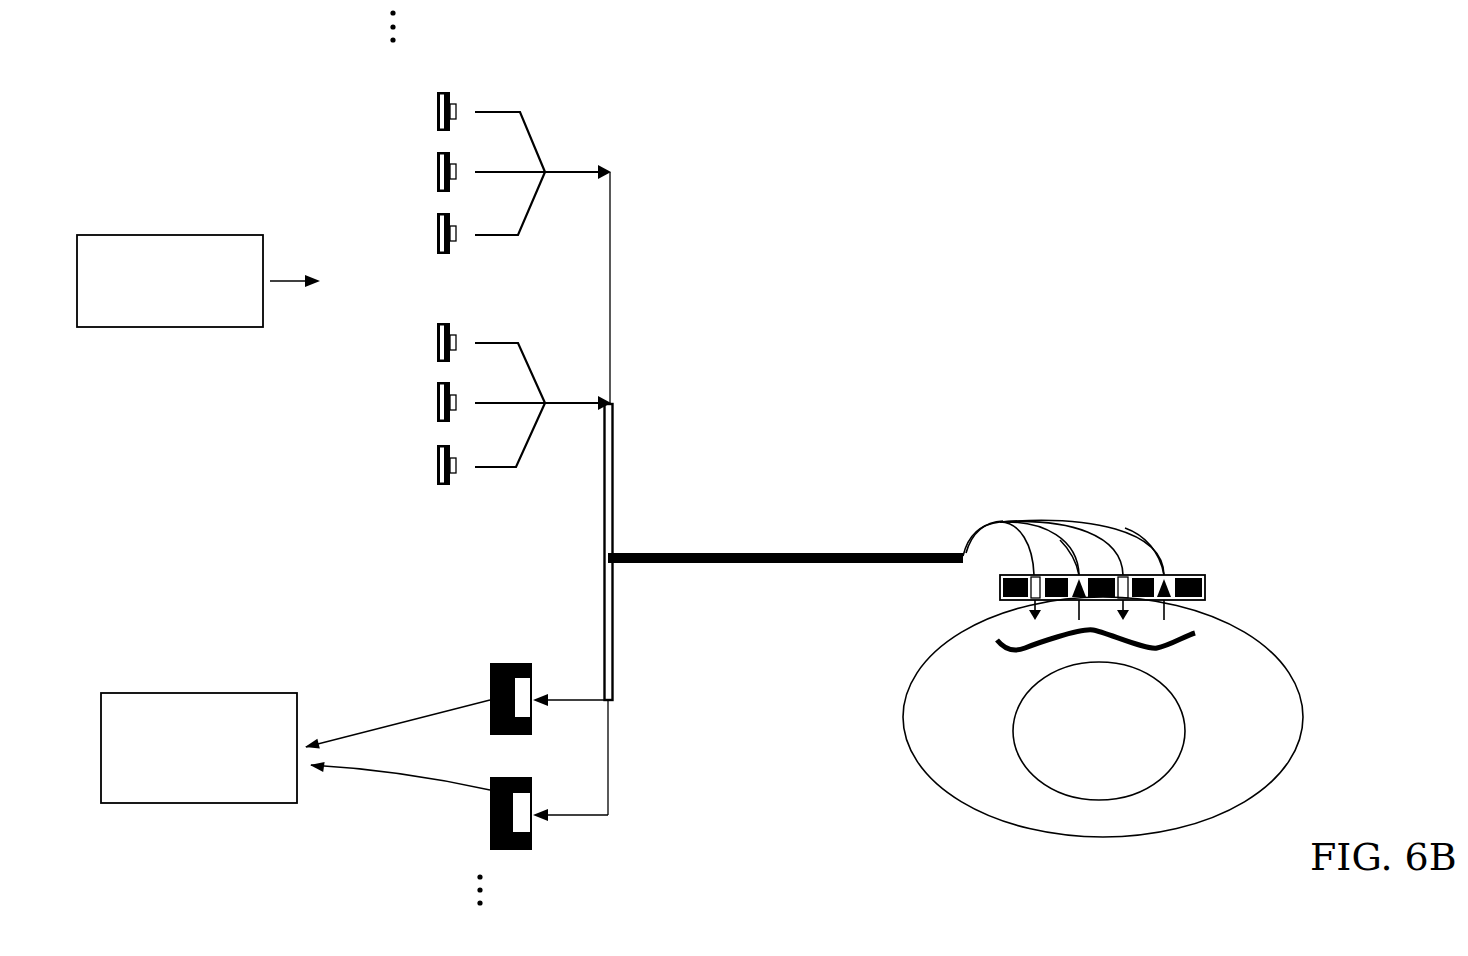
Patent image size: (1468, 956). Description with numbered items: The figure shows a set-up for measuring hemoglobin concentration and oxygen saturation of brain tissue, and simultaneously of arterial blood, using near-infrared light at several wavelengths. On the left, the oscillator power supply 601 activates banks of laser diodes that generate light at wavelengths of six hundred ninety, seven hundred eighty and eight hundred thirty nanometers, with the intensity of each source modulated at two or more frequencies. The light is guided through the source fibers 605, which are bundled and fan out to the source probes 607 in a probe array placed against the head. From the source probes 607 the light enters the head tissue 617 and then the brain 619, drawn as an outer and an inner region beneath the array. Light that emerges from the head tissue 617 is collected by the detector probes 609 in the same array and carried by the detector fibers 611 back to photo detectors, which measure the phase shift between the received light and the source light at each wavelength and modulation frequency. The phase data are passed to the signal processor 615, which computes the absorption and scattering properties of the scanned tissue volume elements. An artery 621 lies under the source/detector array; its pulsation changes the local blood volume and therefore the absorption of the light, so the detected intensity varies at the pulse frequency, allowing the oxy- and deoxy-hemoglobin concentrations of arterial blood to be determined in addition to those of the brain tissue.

The oscillator power supply 601 is at (246, 295).
The source fibers 605 is at (1127, 527).
The source probes 607 is at (1122, 578).
The detector probes 609 is at (1162, 578).
The detector fibers 611 is at (1128, 533).
The signal processor 615 is at (282, 763).
The head tissue 617 is at (1236, 803).
The brain 619 is at (1148, 726).
The artery 621 is at (1195, 633).